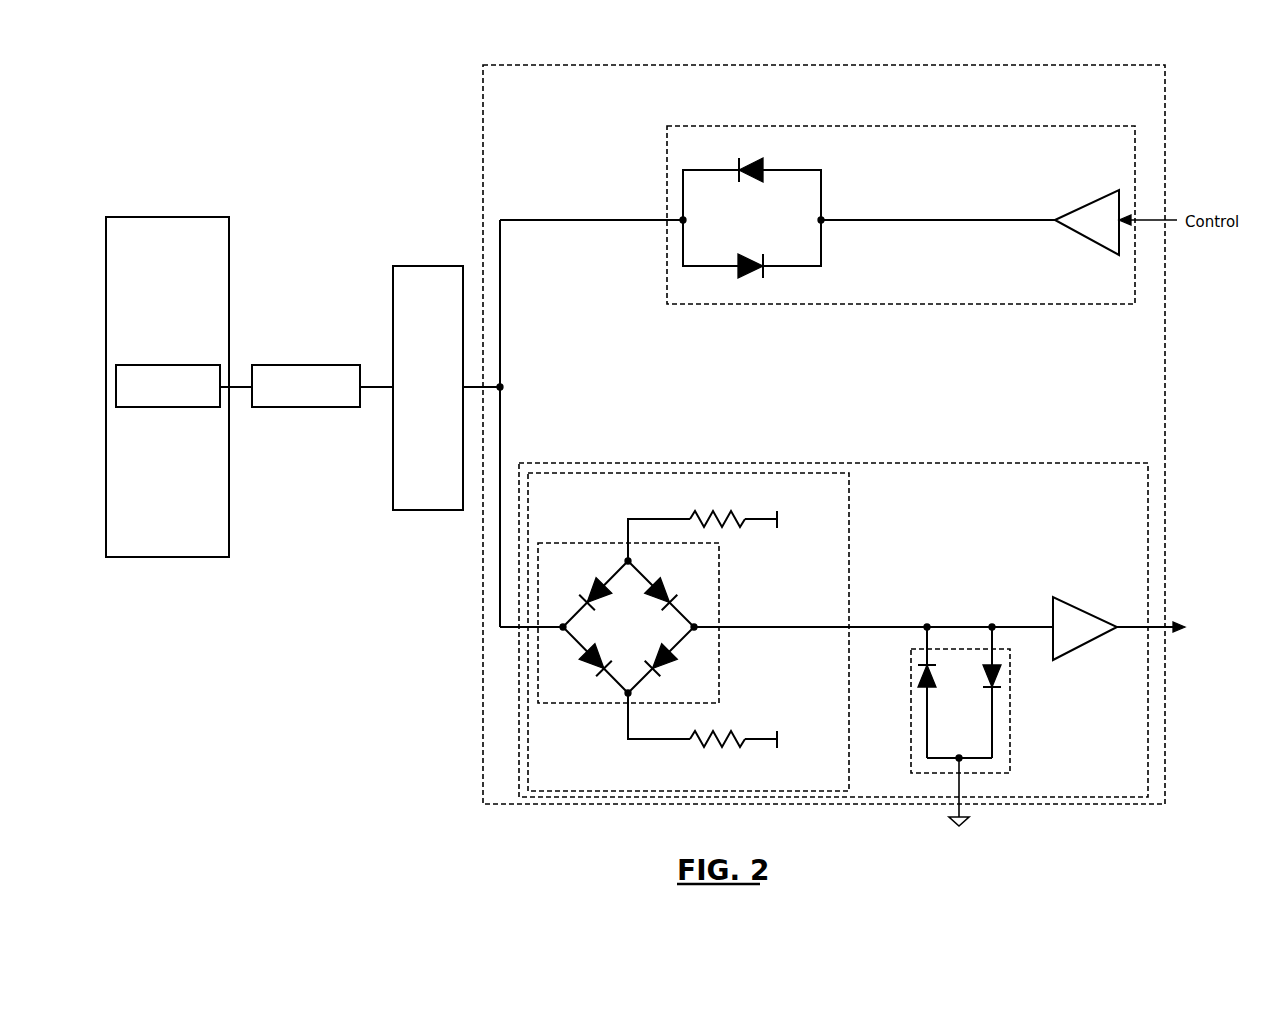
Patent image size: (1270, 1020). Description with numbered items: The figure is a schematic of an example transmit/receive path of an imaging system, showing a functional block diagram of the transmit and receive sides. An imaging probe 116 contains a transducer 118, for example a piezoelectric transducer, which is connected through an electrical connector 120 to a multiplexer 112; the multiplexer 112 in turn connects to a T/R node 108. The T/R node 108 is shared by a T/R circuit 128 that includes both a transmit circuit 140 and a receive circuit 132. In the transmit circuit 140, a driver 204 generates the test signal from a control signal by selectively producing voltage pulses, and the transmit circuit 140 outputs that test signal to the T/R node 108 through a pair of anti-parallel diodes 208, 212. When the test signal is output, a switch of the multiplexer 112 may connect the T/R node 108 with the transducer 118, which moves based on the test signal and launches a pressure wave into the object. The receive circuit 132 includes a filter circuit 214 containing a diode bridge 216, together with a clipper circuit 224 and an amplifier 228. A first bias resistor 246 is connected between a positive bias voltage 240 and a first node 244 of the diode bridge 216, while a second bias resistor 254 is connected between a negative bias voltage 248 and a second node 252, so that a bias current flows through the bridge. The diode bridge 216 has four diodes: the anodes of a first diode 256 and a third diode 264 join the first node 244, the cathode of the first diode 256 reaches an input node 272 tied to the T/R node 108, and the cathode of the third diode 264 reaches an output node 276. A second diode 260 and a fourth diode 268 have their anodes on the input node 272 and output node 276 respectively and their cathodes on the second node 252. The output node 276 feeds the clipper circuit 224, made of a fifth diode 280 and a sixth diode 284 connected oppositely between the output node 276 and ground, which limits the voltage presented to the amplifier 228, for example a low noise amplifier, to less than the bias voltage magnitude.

The T/R node 108 is at (503, 386).
The multiplexer 112 is at (430, 266).
The imaging probe 116 is at (163, 217).
The transducer 118 is at (163, 365).
The electrical connector 120 is at (301, 365).
The T/R circuit 128 is at (1166, 95).
The receive circuit 132 is at (905, 463).
The transmit circuit 140 is at (903, 304).
The driver 204 is at (1088, 206).
The anti-parallel diode 208 is at (748, 182).
The anti-parallel diode 212 is at (750, 256).
The filter circuit 214 is at (598, 473).
The diode bridge 216 is at (540, 543).
The clipper circuit 224 is at (964, 726).
The amplifier 228 is at (1085, 605).
The positive bias voltage 240 is at (777, 528).
The first node 244 is at (626, 560).
The first bias resistor 246 is at (731, 527).
The negative bias voltage 248 is at (777, 747).
The second node 252 is at (628, 694).
The second bias resistor 254 is at (730, 747).
The first diode 256 is at (598, 604).
The second diode 260 is at (600, 660).
The third diode 264 is at (672, 594).
The fourth diode 268 is at (660, 672).
The input node 272 is at (563, 625).
The output node 276 is at (695, 628).
The fifth diode 280 is at (922, 670).
The sixth diode 284 is at (1000, 675).